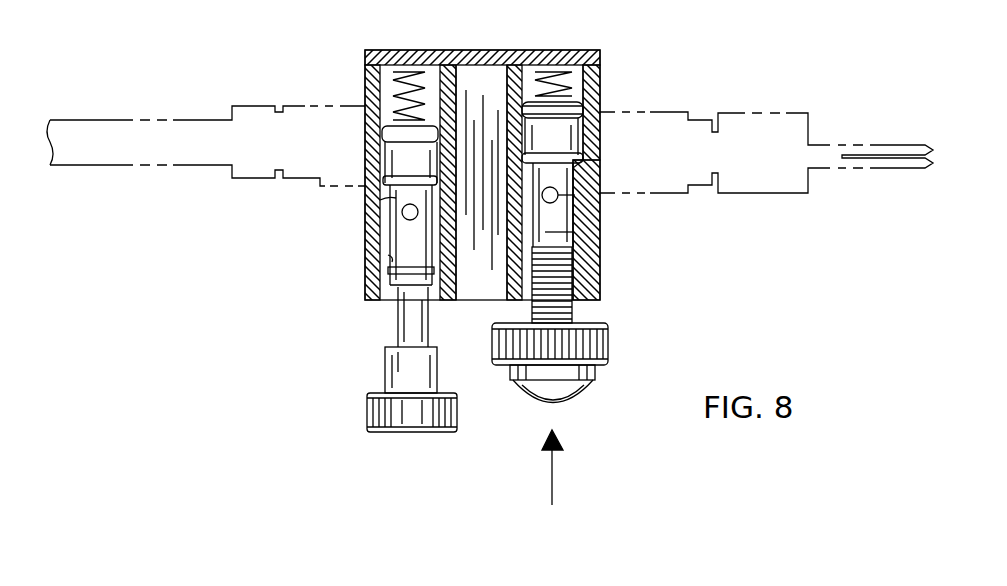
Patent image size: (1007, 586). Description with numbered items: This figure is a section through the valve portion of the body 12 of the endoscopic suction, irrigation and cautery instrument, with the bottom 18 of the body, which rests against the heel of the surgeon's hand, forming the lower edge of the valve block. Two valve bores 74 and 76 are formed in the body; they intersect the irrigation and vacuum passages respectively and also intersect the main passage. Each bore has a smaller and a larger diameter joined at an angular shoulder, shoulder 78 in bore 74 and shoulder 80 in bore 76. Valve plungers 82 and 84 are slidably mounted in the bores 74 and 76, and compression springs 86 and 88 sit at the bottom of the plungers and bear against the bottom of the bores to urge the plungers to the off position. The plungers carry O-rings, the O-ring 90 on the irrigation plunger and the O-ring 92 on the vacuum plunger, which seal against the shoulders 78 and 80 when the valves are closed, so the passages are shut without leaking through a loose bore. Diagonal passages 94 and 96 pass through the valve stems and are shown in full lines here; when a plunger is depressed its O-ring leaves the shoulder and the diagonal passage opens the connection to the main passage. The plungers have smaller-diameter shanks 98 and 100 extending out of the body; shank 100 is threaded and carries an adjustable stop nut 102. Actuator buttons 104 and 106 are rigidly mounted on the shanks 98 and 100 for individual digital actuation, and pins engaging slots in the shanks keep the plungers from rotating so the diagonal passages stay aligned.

The body 12 is at (568, 34).
The bottom 18 is at (480, 50).
The valve bore 74 is at (407, 252).
The valve bore 76 is at (553, 232).
The shoulder 78 is at (400, 162).
The shoulder 80 is at (578, 186).
The valve plunger 82 is at (386, 258).
The valve plunger 84 is at (568, 250).
The compression spring 86 is at (393, 98).
The compression spring 88 is at (600, 93).
The O-ring 90 is at (403, 208).
The seal ring 92 is at (575, 178).
The diagonal passage 94 is at (395, 200).
The diagonal passage 96 is at (580, 180).
The shank 98 is at (397, 332).
The shank 100 is at (570, 313).
The adjustable stop nut 102 is at (610, 345).
The actuator button 104 is at (440, 432).
The actuator button 106 is at (570, 410).